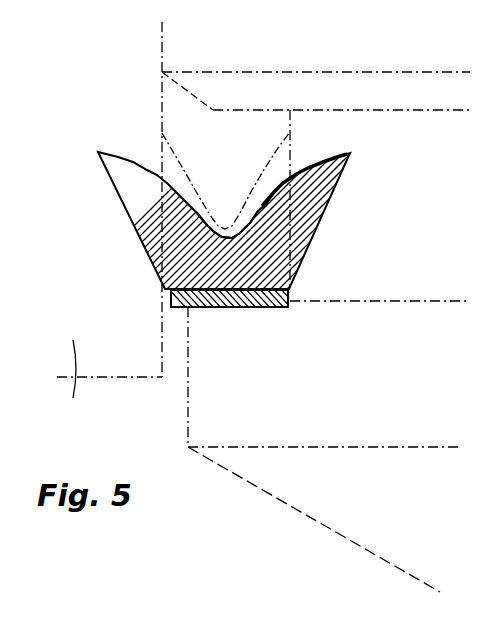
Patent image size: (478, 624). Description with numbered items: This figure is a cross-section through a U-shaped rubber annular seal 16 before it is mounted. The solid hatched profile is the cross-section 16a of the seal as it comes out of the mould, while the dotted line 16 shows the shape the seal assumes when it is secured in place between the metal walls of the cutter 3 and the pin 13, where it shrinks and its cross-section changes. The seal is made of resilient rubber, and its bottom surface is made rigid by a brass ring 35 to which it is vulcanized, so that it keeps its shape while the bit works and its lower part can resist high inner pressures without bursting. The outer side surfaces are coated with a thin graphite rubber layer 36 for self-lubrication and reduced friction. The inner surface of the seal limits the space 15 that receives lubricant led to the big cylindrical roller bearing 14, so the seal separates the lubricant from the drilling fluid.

The cutter 3 is at (72, 384).
The pin 13 is at (245, 435).
The big cylindrical roller bearing 14 is at (279, 89).
The space 15 is at (230, 198).
The annular seal 16 is at (280, 153).
The cross-section of the annular seal before mounting 16a is at (322, 188).
The brass ring 35 is at (257, 308).
The graphite rubber layer 36 is at (138, 237).